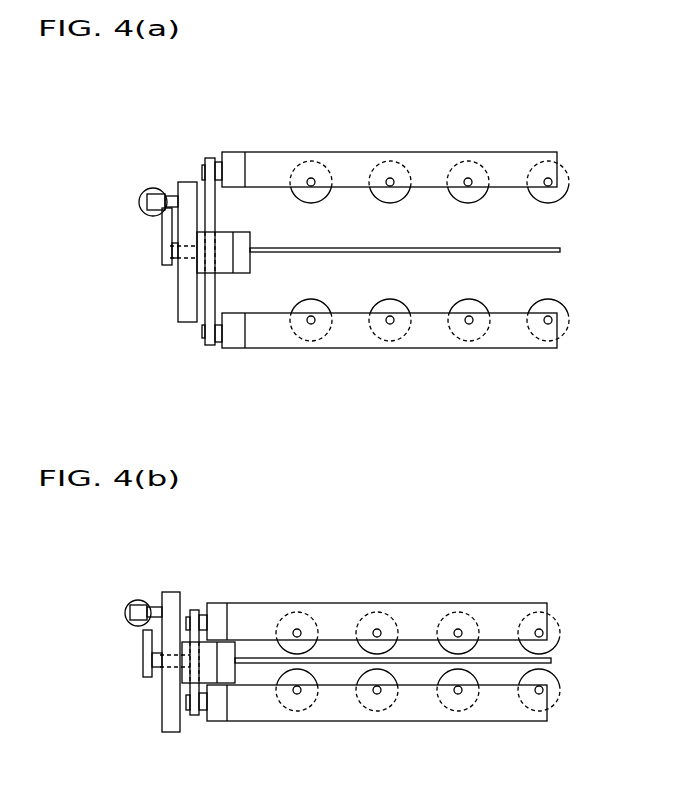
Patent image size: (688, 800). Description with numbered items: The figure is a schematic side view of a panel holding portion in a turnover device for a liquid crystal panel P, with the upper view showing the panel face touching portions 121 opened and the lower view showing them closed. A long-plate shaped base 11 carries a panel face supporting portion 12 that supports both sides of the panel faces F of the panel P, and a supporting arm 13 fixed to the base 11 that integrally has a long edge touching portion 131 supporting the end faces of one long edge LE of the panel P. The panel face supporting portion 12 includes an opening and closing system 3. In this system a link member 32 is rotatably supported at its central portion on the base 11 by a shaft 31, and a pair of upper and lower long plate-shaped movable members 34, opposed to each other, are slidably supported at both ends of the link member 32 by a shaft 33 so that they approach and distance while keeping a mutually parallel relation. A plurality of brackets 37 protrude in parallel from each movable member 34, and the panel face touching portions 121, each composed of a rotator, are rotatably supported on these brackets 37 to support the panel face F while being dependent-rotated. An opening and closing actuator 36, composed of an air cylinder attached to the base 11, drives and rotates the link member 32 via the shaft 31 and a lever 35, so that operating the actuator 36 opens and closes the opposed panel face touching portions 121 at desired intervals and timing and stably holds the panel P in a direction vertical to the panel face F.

In FIG. 4A, the opening and closing system 3 is at (126, 170).
In FIG. 4B, the opening and closing system 3 is at (124, 576).
In FIG. 4A, the base 11 is at (177, 307).
In FIG. 4B, the base 11 is at (160, 718).
In FIG. 4A, the panel face supporting portion 12 is at (548, 131).
In FIG. 4B, the panel face supporting portion 12 is at (538, 582).
In FIG. 4A, the supporting arm 13 is at (243, 271).
In FIG. 4B, the supporting arm 13 is at (230, 707).
In FIG. 4A, the shaft 31 is at (187, 268).
In FIG. 4B, the shaft 31 is at (170, 673).
In FIG. 4A, the link member 32 is at (207, 184).
In FIG. 4B, the link member 32 is at (194, 608).
In FIG. 4A, the shaft 33 is at (203, 167).
In FIG. 4B, the shaft 33 is at (196, 662).
In FIG. 4A, the movable portion 34 is at (232, 158).
In FIG. 4B, the movable portion 34 is at (218, 606).
In FIG. 4A, the lever 35 is at (162, 231).
In FIG. 4B, the lever 35 is at (143, 640).
In FIG. 4A, the opening and closing actuator 36 is at (141, 194).
In FIG. 4B, the opening and closing actuator 36 is at (125, 606).
In FIG. 4A, the bracket 37 is at (418, 151).
In FIG. 4B, the bracket 37 is at (407, 602).
In FIG. 4A, the panel face touching portion 121 is at (480, 197).
In FIG. 4B, the panel face touching portion 121 is at (558, 619).
In FIG. 4A, the long edge touching portion 131 is at (250, 266).
In FIG. 4B, the long edge touching portion 131 is at (237, 673).
In FIG. 4A, the liquid crystal panel P is at (563, 249).
In FIG. 4B, the liquid crystal panel P is at (554, 660).
In FIG. 4A, the panel face F is at (351, 247).
In FIG. 4A, the long edge LE is at (249, 249).